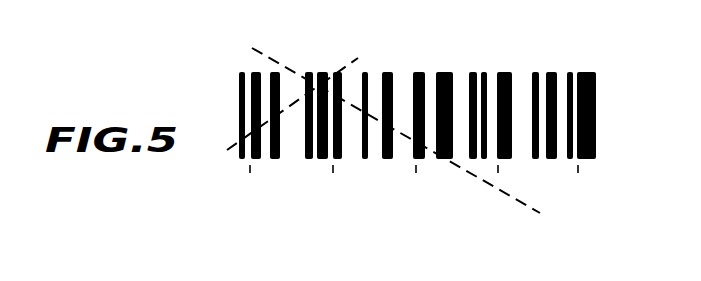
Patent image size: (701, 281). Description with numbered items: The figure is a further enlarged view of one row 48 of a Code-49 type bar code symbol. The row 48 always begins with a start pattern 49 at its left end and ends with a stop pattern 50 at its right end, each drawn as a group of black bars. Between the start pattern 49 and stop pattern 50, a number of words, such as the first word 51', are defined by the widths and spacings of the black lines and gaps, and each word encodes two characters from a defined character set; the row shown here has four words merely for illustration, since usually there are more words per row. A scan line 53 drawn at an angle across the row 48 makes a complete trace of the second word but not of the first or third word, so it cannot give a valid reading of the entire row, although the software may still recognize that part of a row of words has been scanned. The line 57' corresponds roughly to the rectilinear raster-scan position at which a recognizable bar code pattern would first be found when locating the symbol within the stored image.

The row 48 is at (371, 99).
The start pattern 49 is at (248, 63).
The stop pattern 50 is at (598, 70).
The word 51' is at (291, 197).
The scan line 53 is at (515, 200).
The line 57' is at (324, 89).